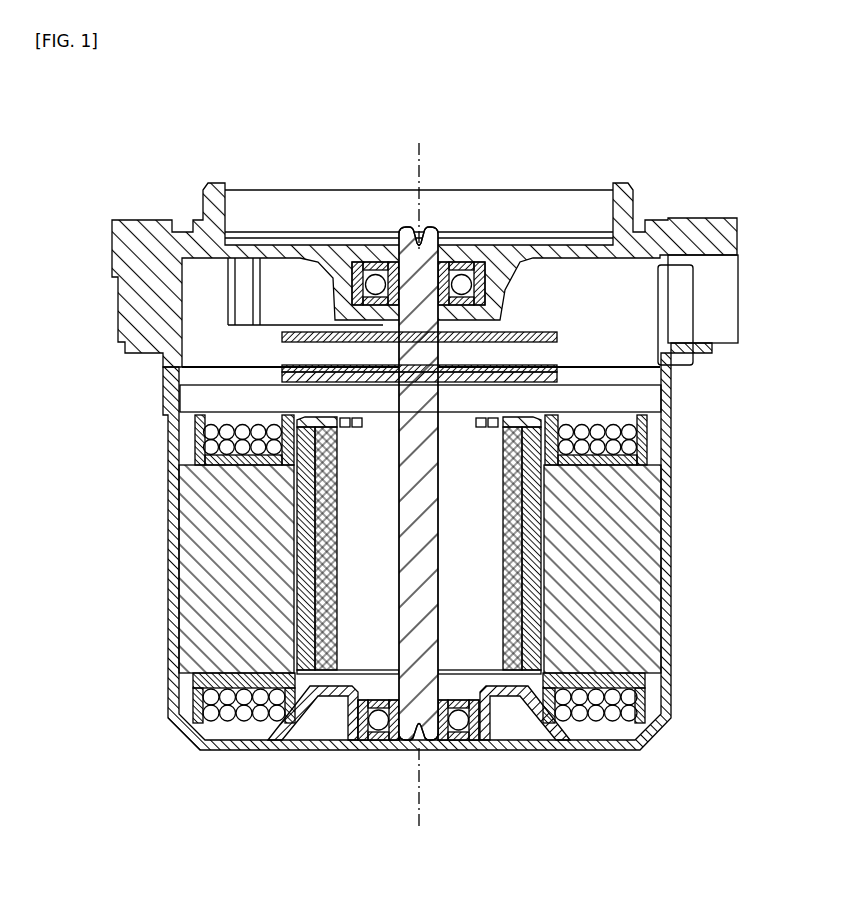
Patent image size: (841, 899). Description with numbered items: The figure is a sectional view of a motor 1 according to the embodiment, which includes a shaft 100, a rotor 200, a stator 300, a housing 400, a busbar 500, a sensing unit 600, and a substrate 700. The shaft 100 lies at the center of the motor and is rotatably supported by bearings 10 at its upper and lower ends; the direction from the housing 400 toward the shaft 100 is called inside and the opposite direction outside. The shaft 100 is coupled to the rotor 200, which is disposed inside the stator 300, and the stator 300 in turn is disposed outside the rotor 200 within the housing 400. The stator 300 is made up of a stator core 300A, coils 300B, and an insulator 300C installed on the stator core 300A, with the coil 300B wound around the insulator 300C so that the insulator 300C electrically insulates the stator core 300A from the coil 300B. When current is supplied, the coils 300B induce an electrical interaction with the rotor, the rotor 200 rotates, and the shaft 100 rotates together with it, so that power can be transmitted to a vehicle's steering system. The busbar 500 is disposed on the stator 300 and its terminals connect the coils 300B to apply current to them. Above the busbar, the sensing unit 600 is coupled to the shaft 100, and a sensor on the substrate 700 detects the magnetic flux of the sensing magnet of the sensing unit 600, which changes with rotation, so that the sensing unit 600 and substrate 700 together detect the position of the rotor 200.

The motor 1 is at (73, 73).
The bearings 10 is at (488, 268).
The shaft 100 is at (423, 572).
The rotor 200 is at (359, 491).
The stator 300 is at (495, 569).
The stator core 300A is at (637, 500).
The coils 300B is at (612, 428).
The insulator 300C is at (640, 460).
The housing 400 is at (160, 372).
The busbar 500 is at (187, 402).
The sensing unit 600 is at (560, 353).
The substrate 700 is at (560, 333).